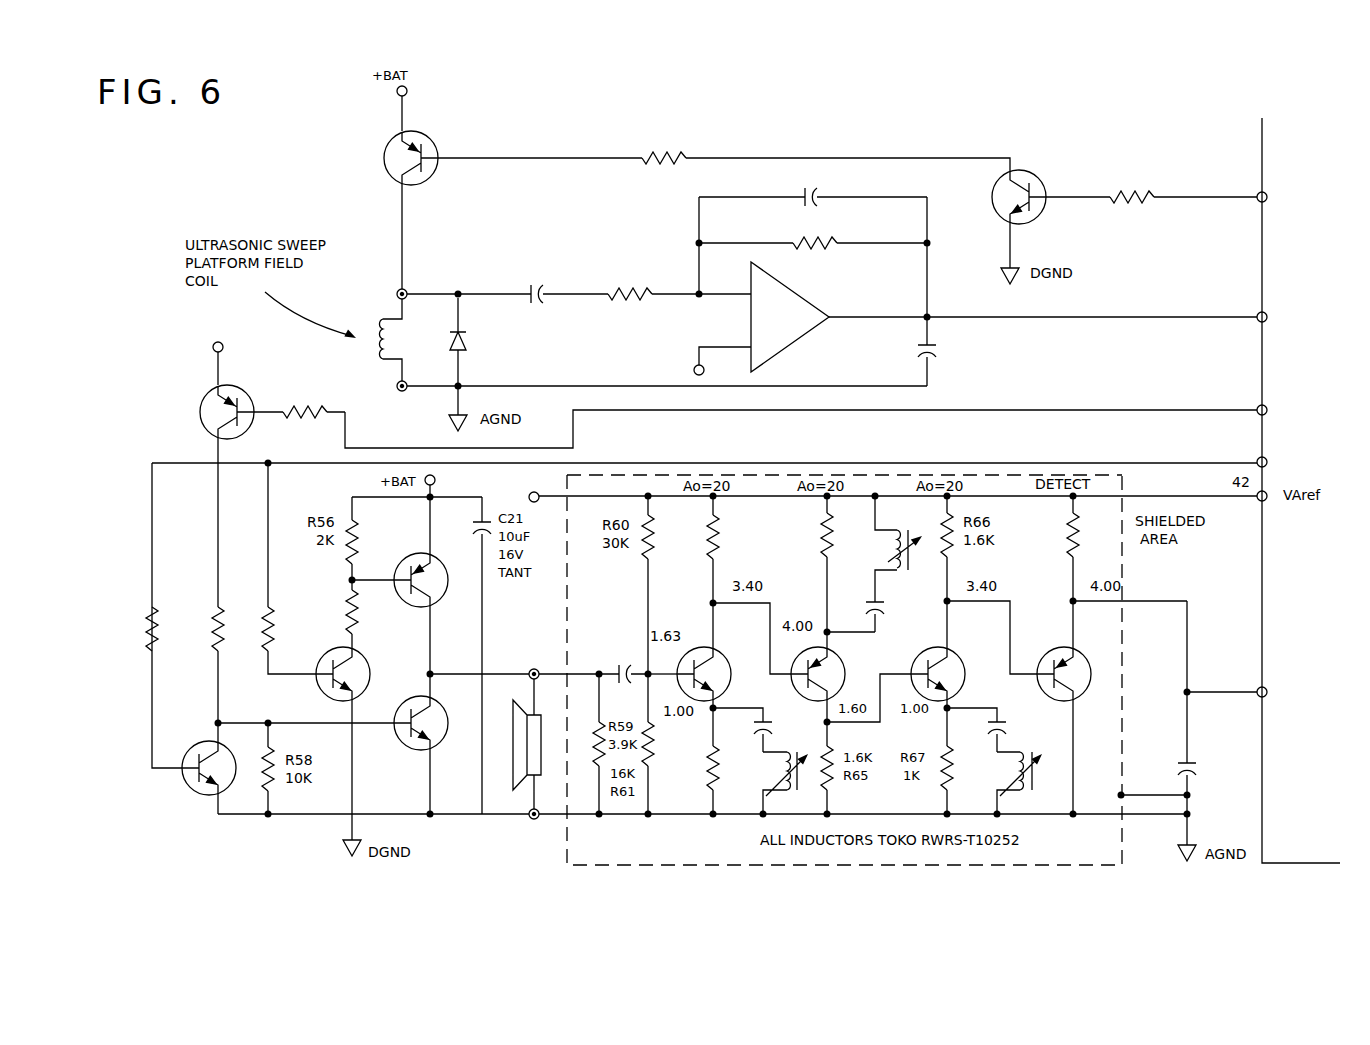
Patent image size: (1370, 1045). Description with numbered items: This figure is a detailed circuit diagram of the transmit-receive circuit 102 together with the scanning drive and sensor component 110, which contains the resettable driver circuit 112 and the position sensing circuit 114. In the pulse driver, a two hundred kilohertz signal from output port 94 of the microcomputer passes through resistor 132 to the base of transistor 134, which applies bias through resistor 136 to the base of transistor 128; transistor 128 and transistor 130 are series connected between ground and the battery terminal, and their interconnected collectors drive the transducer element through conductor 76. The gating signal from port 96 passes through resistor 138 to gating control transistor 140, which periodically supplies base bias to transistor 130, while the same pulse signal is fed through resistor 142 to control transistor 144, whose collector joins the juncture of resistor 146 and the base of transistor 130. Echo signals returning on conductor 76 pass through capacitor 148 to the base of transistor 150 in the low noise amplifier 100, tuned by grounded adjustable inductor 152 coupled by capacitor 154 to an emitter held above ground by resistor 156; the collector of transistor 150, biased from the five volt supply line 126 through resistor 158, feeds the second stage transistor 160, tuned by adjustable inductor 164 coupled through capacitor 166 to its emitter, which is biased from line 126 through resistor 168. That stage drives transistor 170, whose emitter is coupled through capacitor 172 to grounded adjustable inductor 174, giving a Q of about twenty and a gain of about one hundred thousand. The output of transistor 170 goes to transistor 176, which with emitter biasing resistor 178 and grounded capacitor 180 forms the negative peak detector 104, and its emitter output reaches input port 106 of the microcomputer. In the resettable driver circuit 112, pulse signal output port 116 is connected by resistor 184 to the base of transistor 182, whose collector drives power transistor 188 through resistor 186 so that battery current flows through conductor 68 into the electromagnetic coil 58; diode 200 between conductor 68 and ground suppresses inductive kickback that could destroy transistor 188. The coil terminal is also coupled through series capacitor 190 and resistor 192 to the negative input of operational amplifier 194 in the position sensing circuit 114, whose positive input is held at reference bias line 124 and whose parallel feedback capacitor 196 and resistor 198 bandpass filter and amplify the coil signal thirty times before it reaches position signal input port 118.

The electromagnetic coil 58 is at (389, 344).
The conductor 68 is at (409, 291).
The conductor 76 is at (528, 675).
The signal output port 94 is at (1256, 464).
The signal output port 96 is at (1268, 412).
The low noise amplifier 100 is at (810, 852).
The transmit-receive circuit 102 is at (662, 470).
The negative peak detector 104 is at (1088, 742).
The input port 106 is at (1268, 688).
The scanning drive and sensor component 110 is at (627, 125).
The resettable driver circuit 112 is at (932, 147).
The position sensing circuit 114 is at (880, 362).
The pulse signal output port 116 is at (1268, 200).
The position signal input port 118 is at (1268, 320).
The bias line 124 is at (697, 367).
The positive five volt supply line 126 is at (213, 351).
The transistor 128 is at (406, 558).
The transistor 130 is at (402, 748).
The resistor 132 is at (266, 654).
The transistor 134 is at (372, 683).
The resistor 136 is at (345, 595).
The resistor 138 is at (312, 418).
The gating control transistor 140 is at (246, 395).
The resistor 142 is at (150, 622).
The control transistor 144 is at (205, 745).
The resistor 146 is at (216, 654).
The capacitor 148 is at (620, 670).
The transistor 150 is at (698, 650).
The adjustable inductor 152 is at (768, 790).
The capacitor 154 is at (760, 735).
The resistor 156 is at (712, 775).
The resistor 158 is at (718, 530).
The transistor Q26 160 is at (791, 666).
The adjustable inductor 164 is at (895, 545).
The capacitor 166 is at (866, 604).
The resistor 168 is at (827, 530).
The transistor 170 is at (961, 658).
The capacitor 172 is at (1010, 737).
The adjustable inductor 174 is at (1008, 765).
The transistor 176 is at (1091, 674).
The emitter biasing resistor 178 is at (1085, 520).
The capacitor 180 is at (1180, 762).
The transistor 182 is at (1047, 205).
The resistor 184 is at (1150, 192).
The resistor 186 is at (684, 160).
The power transistor 188 is at (426, 138).
The capacitor 190 is at (530, 290).
The resistor 192 is at (632, 300).
The operational amplifier 194 is at (782, 345).
The feedback capacitor 196 is at (818, 206).
The feedback resistor 198 is at (800, 240).
The diode 200 is at (452, 352).